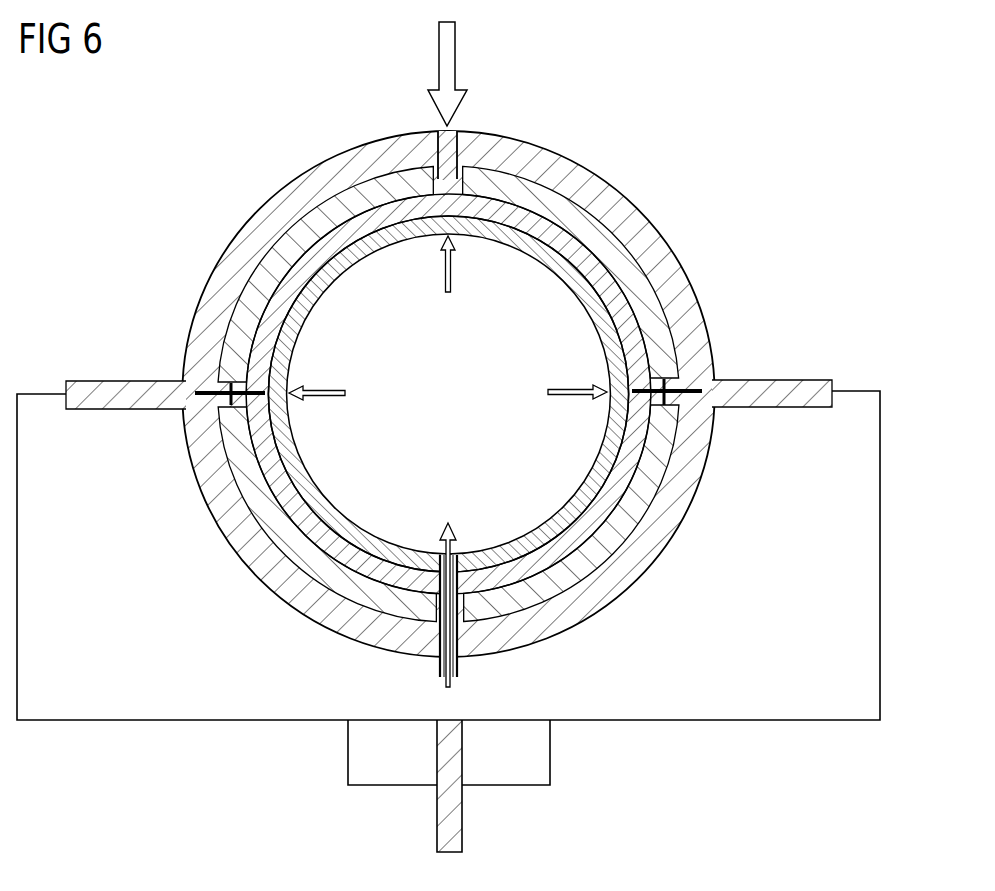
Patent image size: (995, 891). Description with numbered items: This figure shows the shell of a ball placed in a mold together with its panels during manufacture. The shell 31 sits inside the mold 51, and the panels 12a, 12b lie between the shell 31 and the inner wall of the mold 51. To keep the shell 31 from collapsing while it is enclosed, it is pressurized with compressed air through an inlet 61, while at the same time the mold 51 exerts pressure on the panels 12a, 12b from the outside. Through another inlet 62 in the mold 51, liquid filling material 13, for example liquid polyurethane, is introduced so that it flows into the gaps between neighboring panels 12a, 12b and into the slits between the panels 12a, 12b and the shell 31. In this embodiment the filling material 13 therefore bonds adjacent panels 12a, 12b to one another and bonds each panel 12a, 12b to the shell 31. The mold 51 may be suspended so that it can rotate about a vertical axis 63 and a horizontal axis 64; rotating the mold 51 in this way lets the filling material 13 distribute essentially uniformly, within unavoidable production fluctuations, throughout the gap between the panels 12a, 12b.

The mold 51 is at (336, 177).
The inlet 62 is at (466, 133).
The panel 12b is at (604, 237).
The panel 12a is at (235, 313).
The horizontal axis 64 is at (778, 379).
The shell 31 is at (233, 462).
The filling material 13 is at (273, 587).
The inlet 61 is at (469, 662).
The vertical axis 63 is at (455, 815).